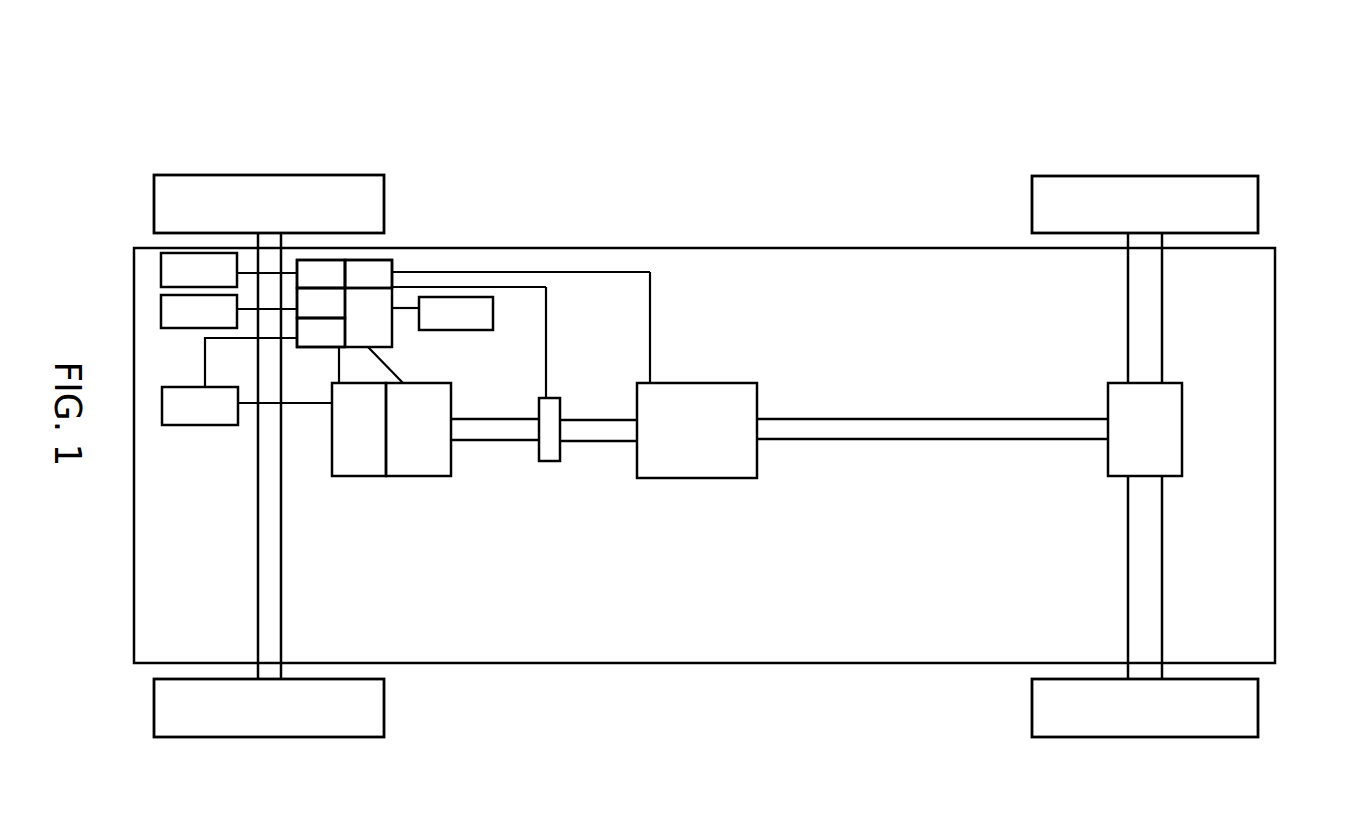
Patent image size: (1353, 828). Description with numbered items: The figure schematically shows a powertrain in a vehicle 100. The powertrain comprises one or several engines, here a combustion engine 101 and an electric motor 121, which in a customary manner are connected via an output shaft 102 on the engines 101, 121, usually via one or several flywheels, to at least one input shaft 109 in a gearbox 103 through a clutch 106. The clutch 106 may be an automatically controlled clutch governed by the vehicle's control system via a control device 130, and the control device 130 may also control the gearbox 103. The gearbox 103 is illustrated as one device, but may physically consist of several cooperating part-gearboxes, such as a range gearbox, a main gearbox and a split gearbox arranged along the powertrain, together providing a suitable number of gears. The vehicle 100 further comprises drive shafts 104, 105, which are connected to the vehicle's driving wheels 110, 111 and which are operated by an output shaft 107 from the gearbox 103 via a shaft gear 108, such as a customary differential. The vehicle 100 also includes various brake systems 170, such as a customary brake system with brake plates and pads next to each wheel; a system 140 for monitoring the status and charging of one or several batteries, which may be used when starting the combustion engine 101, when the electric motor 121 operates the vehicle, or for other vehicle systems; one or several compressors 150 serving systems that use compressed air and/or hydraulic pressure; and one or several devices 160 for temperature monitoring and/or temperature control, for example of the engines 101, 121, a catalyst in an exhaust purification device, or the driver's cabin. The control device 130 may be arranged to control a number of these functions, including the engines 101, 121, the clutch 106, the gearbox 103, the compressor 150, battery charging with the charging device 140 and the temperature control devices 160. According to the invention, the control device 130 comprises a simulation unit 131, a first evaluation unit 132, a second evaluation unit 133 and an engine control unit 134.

The vehicle 100 is at (605, 83).
The combustion engine 101 is at (420, 465).
The electric motor 121 is at (363, 465).
The output shaft 102 is at (477, 427).
The clutch 106 is at (545, 450).
The input shaft 109 is at (587, 428).
The gearbox 103 is at (700, 393).
The output shaft 107 is at (1028, 433).
The shaft gear 108 is at (1175, 426).
The drive shaft 104 is at (1150, 308).
The drive shaft 105 is at (1153, 586).
The driving wheel 110 is at (1253, 711).
The driving wheel 111 is at (1252, 199).
The control device 130 is at (421, 329).
The simulation unit 131 is at (321, 333).
The first evaluation unit 132 is at (321, 304).
The second evaluation unit 133 is at (321, 275).
The engine control unit 134 is at (497, 321).
The system for monitoring the status and charging of batteries 140 is at (456, 313).
The compressor 150 is at (247, 381).
The device for temperature monitoring and/or temperature control 160 is at (229, 311).
The brake system 170 is at (229, 270).